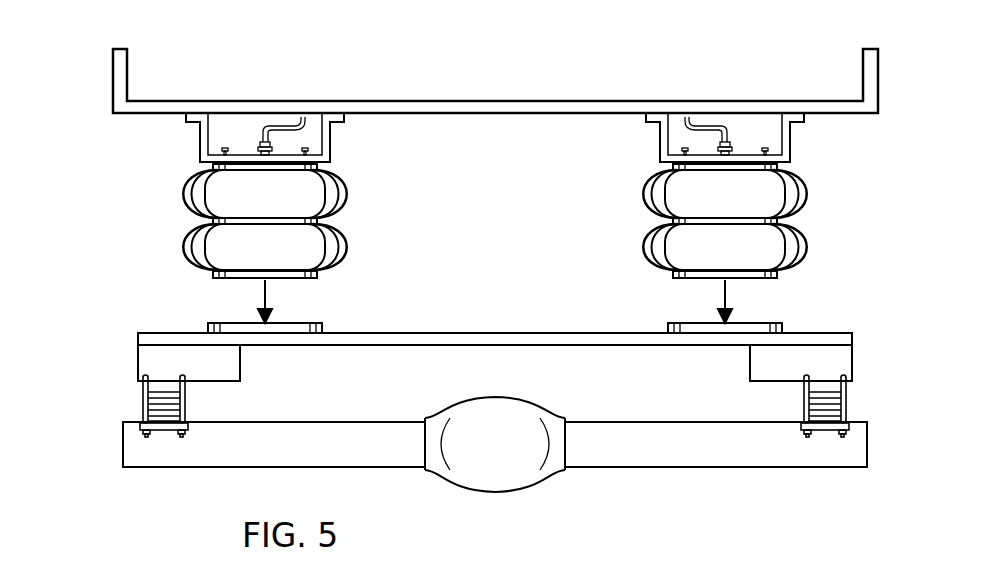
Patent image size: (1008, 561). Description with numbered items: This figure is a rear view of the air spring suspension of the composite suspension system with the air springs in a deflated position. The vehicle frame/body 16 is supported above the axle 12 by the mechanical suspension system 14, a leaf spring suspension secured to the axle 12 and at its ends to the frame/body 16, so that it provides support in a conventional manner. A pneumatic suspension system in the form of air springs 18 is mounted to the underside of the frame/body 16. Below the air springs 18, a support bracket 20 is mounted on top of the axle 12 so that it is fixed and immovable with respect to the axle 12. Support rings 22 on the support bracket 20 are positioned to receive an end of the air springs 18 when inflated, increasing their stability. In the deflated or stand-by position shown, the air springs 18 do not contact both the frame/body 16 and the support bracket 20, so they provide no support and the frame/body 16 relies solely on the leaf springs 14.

The axle 12 is at (595, 467).
The mechanical suspension system 14 is at (163, 402).
The frame/body 16 is at (113, 83).
The air springs 18 is at (183, 193).
The support bracket 20 is at (820, 333).
The support rings 22 is at (313, 323).